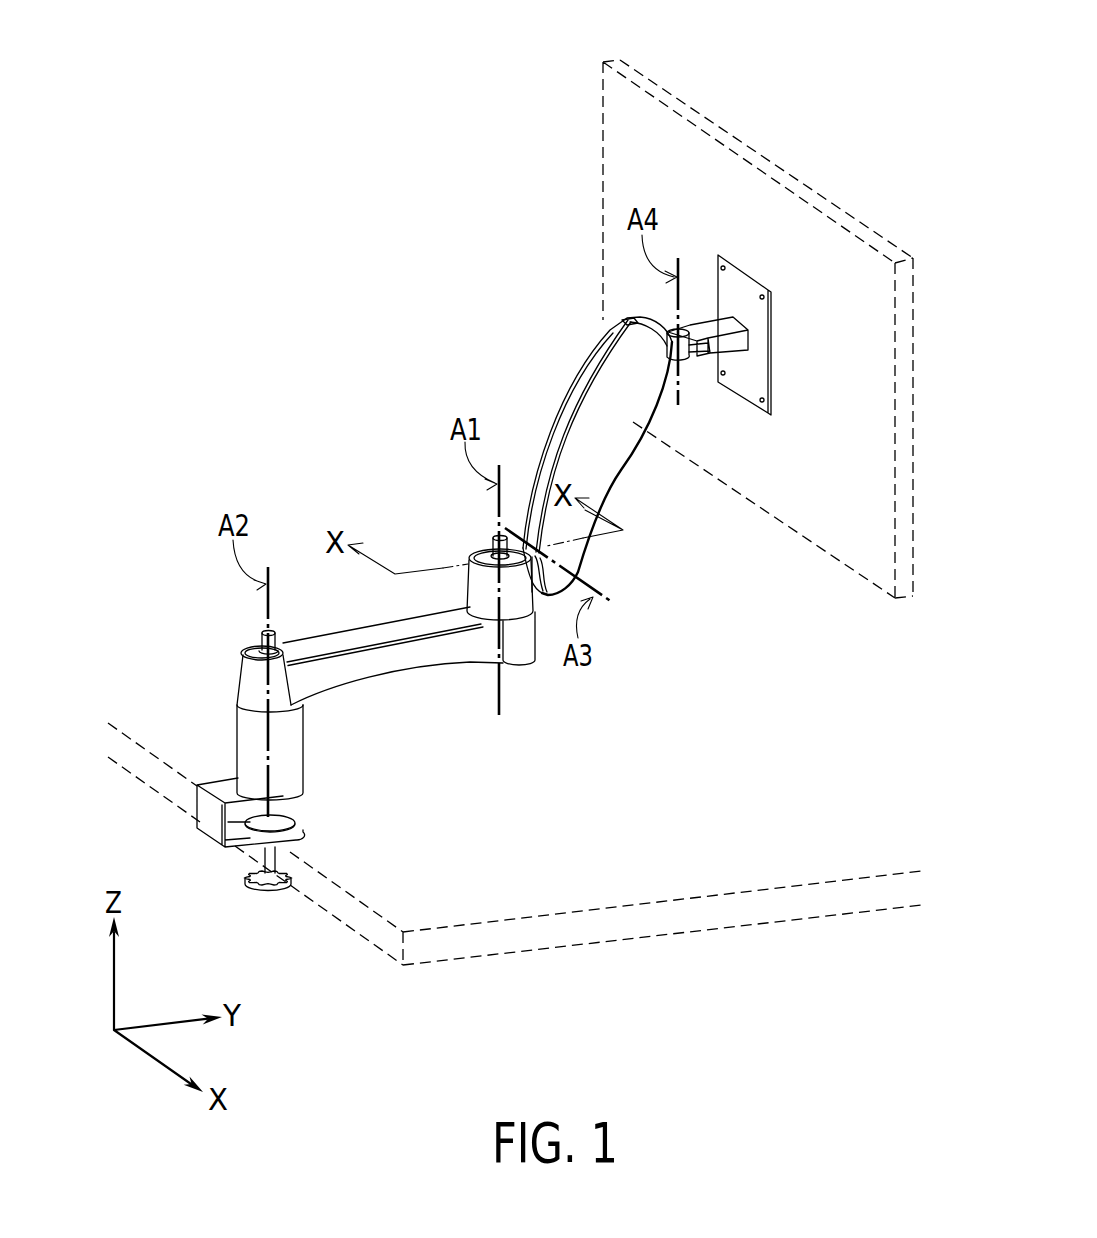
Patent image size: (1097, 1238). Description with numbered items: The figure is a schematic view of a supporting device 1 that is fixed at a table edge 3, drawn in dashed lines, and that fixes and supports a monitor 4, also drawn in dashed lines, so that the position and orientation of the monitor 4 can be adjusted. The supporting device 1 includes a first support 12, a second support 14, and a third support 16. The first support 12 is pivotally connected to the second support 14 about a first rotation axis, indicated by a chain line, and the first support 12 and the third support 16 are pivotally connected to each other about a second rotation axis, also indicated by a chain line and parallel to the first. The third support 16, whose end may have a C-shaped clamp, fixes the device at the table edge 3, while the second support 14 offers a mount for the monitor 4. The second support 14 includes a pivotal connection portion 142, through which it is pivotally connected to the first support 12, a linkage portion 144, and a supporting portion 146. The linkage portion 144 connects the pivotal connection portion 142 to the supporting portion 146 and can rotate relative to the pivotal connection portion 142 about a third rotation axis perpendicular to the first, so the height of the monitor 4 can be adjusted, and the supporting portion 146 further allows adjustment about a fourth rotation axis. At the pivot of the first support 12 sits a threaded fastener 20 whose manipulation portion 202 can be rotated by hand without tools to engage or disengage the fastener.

The supporting device 1 is at (350, 281).
The table edge 3 is at (312, 892).
The monitor 4 is at (697, 117).
The first support 12 is at (386, 603).
The second support 14 is at (812, 585).
The third support 16 is at (248, 733).
The threaded fastener 20 is at (425, 497).
The manipulation portion 202 is at (495, 543).
The pivotal connection portion 142 is at (517, 597).
The linkage portion 144 is at (600, 465).
The supporting portion 146 is at (730, 343).